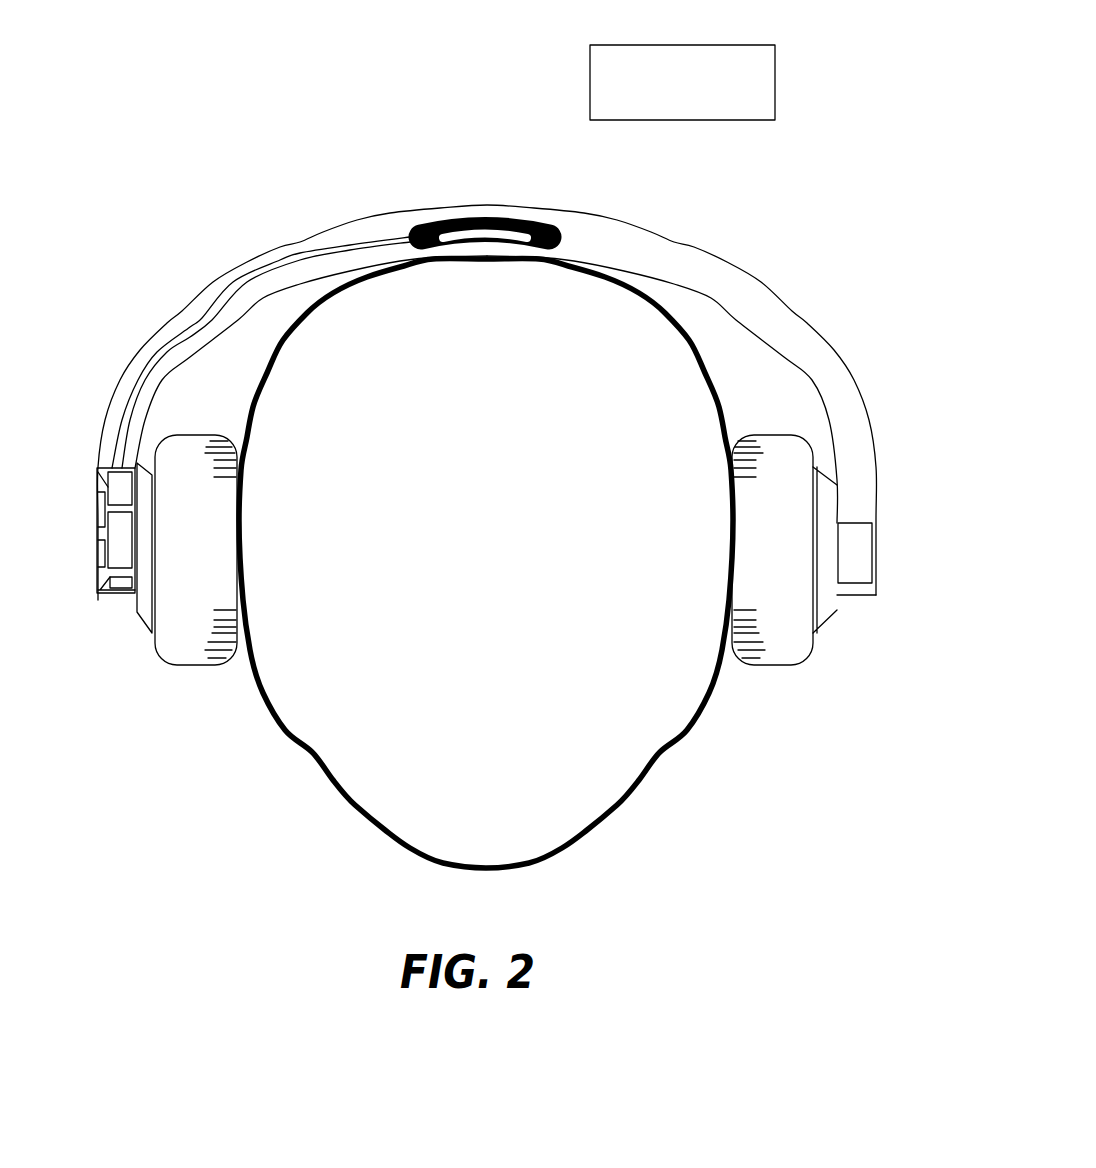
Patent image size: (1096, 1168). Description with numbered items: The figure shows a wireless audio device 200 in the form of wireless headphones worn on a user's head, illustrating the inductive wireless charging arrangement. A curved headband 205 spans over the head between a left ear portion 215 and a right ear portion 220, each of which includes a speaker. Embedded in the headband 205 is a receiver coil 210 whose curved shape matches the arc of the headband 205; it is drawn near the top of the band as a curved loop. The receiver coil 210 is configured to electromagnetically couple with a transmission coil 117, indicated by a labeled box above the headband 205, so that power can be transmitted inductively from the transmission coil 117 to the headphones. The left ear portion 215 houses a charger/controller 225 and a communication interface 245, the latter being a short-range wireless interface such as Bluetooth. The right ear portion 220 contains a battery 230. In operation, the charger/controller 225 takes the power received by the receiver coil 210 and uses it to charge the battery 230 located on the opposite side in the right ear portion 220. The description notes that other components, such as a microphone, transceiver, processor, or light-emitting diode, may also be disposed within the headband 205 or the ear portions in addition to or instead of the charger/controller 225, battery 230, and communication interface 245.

The headset system 200 is at (143, 46).
The headband 205 is at (600, 218).
The receiver coil 210 is at (470, 218).
The left ear portion 215 is at (156, 660).
The right ear portion 220 is at (815, 656).
The charger/controller 225 is at (97, 468).
The battery 230 is at (858, 584).
The communication interface 245 is at (97, 596).
The transmission coil 117 is at (682, 82).